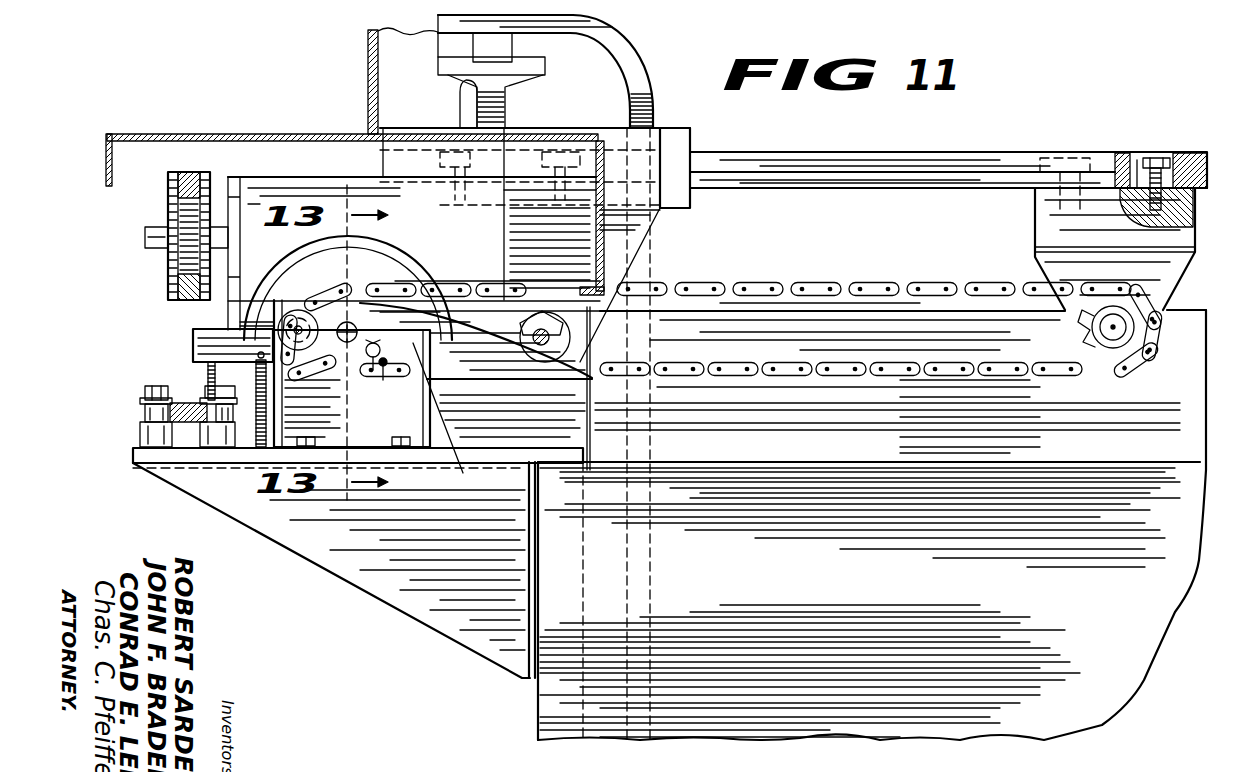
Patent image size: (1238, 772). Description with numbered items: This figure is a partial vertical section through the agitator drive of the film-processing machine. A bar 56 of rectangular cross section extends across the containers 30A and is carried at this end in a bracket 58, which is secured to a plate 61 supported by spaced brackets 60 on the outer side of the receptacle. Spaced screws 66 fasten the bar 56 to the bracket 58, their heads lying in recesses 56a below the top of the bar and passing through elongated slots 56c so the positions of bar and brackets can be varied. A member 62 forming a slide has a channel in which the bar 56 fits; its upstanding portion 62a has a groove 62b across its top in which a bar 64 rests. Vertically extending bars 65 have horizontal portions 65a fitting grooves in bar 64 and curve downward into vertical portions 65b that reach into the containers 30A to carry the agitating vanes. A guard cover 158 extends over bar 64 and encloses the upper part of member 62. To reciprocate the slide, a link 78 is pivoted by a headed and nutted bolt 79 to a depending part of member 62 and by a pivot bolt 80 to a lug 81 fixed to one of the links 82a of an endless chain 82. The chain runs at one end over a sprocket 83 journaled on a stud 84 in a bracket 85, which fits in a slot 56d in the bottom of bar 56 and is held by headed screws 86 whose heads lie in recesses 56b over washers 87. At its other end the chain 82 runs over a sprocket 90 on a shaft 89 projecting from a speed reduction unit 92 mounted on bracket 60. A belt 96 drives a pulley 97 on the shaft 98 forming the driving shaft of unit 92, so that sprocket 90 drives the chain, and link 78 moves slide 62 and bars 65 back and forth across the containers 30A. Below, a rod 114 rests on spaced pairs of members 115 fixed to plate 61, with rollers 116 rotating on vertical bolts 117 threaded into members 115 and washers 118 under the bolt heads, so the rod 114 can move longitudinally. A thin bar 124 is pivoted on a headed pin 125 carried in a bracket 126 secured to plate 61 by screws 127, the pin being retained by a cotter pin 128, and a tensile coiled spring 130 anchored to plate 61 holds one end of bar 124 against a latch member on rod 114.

The housing or guard cover 158 is at (368, 44).
The vertically extending bars 65 is at (620, 53).
The horizontal portions of bars 65 65a is at (462, 28).
The vertical portions of bars 65 65b is at (650, 268).
The bar 64 is at (507, 43).
The slide member 62 is at (680, 108).
The upstanding portion of member 62 62a is at (495, 102).
The groove 62b is at (482, 60).
The bar 56 is at (720, 160).
The recesses 56a is at (483, 163).
The recesses 56b is at (1133, 158).
The elongated slots 56c is at (1202, 158).
The slot 56d is at (1193, 192).
The headed screws 86 is at (1147, 157).
The washers 87 is at (1170, 157).
The bracket 85 is at (1187, 237).
The stud 84 is at (1120, 330).
The sprocket 83 is at (1085, 353).
The endless chain 82 is at (703, 287).
The chain link 82a is at (457, 287).
The containers 30A is at (780, 313).
The spaced screws 66 is at (505, 233).
The speed reduction unit 92 is at (300, 158).
The headed and nutted bolt 79 is at (583, 330).
The sprocket 90 is at (460, 320).
The bracket 58 is at (413, 243).
The spaced brackets 60 is at (282, 293).
The belt 96 is at (193, 172).
The pulley 97 is at (168, 272).
The shaft 98 is at (157, 225).
The pivot bolt 80 is at (315, 307).
The shaft 89 is at (345, 292).
The link 78 is at (400, 283).
The lug 81 is at (262, 324).
The bar 124 is at (200, 340).
The cotter pin 128 is at (383, 363).
The screws 127 is at (407, 427).
The bracket 126 is at (372, 456).
The headed pin 125 is at (449, 416).
The plate 61 is at (172, 457).
The tensile coiled spring 130 is at (253, 413).
The vertically disposed bolts 117 is at (153, 385).
The washers 118 is at (140, 397).
The rollers 116 is at (140, 412).
The spaced pairs of members 115 is at (120, 418).
The rod or bar 114 is at (195, 395).